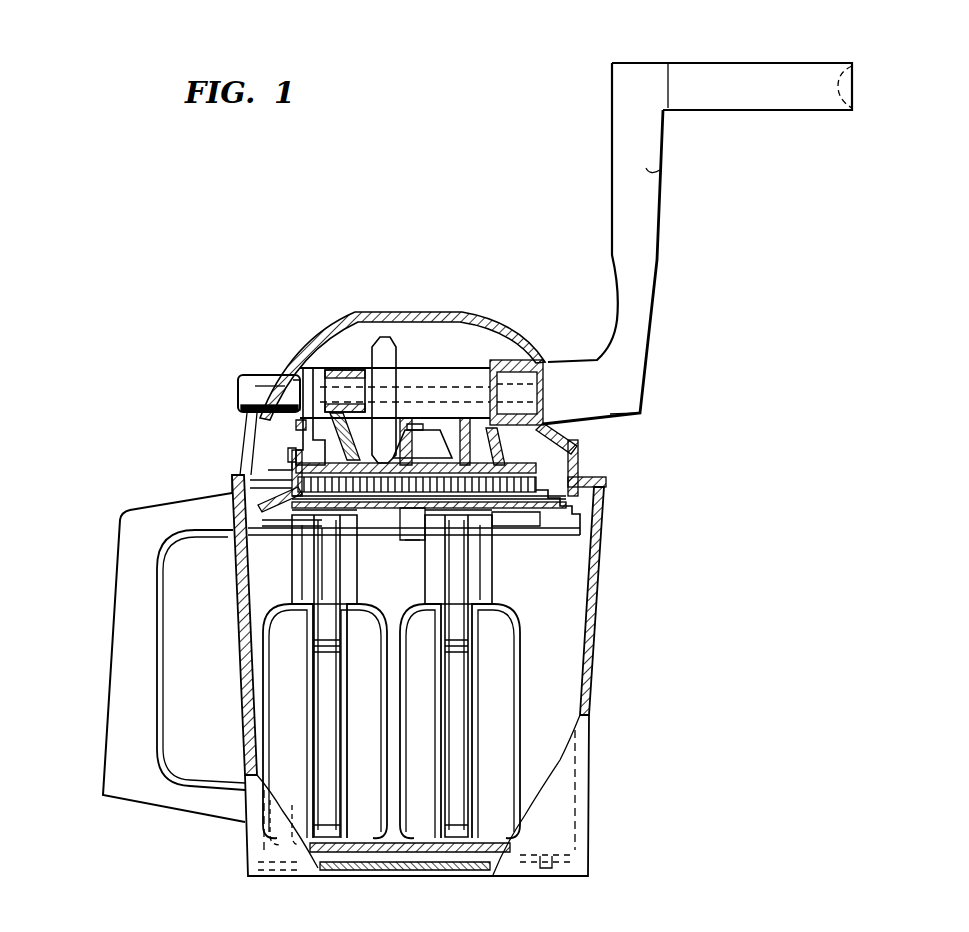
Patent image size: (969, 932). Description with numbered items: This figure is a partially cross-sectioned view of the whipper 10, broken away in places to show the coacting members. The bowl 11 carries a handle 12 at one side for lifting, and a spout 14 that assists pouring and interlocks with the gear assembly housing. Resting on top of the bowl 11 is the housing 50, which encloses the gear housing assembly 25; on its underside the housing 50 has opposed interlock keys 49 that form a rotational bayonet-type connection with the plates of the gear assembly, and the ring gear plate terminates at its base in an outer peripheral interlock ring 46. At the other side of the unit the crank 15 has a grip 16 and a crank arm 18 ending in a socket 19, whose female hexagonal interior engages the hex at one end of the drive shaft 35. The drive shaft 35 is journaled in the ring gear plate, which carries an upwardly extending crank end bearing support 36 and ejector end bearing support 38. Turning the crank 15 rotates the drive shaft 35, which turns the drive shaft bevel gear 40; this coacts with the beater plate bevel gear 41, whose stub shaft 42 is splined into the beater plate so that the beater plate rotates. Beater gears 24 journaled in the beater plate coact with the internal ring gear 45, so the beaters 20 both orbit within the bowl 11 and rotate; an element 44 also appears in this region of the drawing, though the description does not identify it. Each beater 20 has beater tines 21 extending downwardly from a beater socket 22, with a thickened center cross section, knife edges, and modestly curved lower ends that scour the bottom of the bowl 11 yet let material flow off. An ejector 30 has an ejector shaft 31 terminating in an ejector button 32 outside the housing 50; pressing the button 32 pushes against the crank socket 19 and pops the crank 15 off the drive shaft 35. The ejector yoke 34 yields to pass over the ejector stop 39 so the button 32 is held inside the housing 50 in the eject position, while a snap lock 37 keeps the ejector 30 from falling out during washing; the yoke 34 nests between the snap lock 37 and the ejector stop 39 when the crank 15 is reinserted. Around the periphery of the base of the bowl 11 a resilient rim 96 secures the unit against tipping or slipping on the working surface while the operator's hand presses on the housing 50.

The whipper 10 is at (650, 654).
The bowl 11 is at (590, 730).
The handle 12 is at (124, 546).
The spout 14 is at (600, 542).
The crank 15 is at (662, 250).
The grip 16 is at (764, 63).
The crank arm 18 is at (660, 170).
The socket 19 is at (612, 416).
The beaters 20 is at (282, 614).
The beater tines 21 is at (386, 672).
The beater socket 22 is at (300, 574).
The beater gears 24 is at (324, 557).
The gear housing assembly 25 is at (490, 300).
The ejector 30 is at (258, 376).
The ejector shaft 31 is at (308, 368).
The ejector button 32 is at (236, 394).
The ejector yoke 34 is at (304, 372).
The drive shaft 35 is at (408, 336).
The crank end bearing support 36 is at (498, 449).
The snap lock 37 is at (270, 466).
The ejector end bearing support 38 is at (296, 424).
The ejector stop 39 is at (288, 452).
The drive shaft bevel gear 40 is at (343, 368).
The beater plate bevel gear 41 is at (408, 515).
The stub shaft 42 is at (414, 545).
The right blade carrier plate 44 is at (458, 557).
The ring gear 45 is at (526, 526).
The interlock ring 46 is at (600, 506).
The interlock keys 49 is at (278, 530).
The housing 50 is at (518, 332).
The rim 96 is at (590, 866).